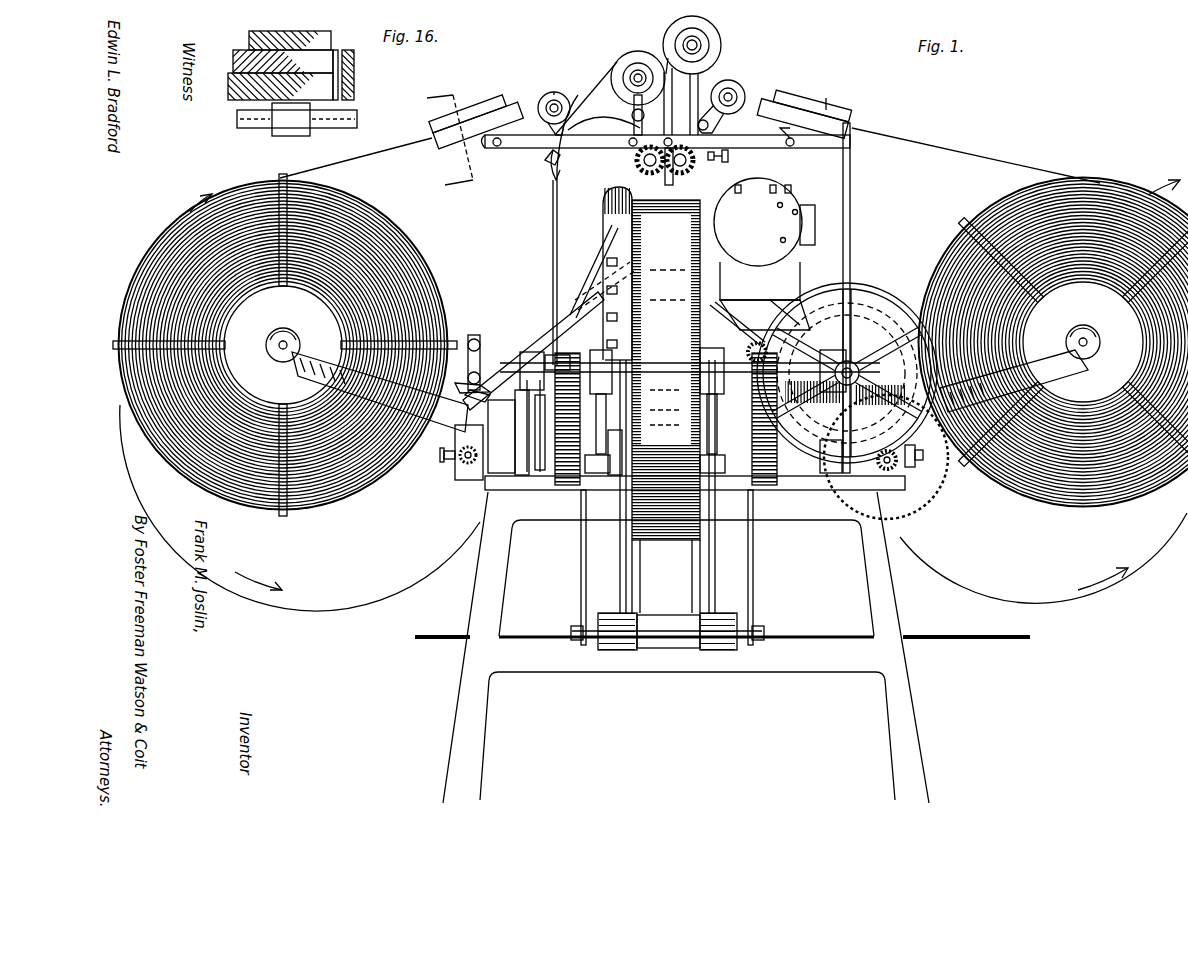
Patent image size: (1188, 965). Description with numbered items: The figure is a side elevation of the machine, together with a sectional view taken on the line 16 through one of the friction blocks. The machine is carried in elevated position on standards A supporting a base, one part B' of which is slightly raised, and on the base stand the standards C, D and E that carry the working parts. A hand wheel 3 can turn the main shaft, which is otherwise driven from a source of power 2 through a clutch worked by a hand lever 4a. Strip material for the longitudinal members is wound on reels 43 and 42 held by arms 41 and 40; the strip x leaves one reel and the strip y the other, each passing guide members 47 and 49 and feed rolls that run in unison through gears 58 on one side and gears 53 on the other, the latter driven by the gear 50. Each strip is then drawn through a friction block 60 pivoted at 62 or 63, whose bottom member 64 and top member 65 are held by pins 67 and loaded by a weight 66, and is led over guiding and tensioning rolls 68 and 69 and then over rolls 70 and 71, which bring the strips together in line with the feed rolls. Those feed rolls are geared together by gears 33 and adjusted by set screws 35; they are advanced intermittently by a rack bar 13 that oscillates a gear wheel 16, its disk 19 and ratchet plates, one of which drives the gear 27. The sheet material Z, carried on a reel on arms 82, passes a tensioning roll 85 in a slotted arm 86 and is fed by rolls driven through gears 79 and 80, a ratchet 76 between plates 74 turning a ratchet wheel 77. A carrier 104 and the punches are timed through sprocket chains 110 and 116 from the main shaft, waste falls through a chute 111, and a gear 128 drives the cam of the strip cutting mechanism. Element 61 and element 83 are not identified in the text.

In FIG. 16, the weight 66 is at (249, 43).
In FIG. 16, the top member 65 is at (338, 52).
In FIG. 16, the pins 67 is at (348, 62).
In FIG. 16, the bottom member 64 is at (354, 95).
In FIG. 1, the reel 43 is at (285, 345).
In FIG. 1, the reel 42 is at (1014, 342).
In FIG. 1, the strip Y y is at (320, 175).
In FIG. 1, the strip X x is at (997, 165).
In FIG. 1, the arm 41 is at (380, 392).
In FIG. 1, the arm 40 is at (1014, 381).
In FIG. 1, the standards A is at (470, 596).
In FIG. 1, the base part B' is at (695, 496).
In FIG. 1, the gears 58 is at (470, 470).
In FIG. 1, the arms 82 is at (567, 487).
In FIG. 1, the ratchet wheel 77 is at (532, 492).
In FIG. 1, the sheet material Z is at (667, 406).
In FIG. 1, the belt drum 83 is at (626, 394).
In FIG. 1, the gear 27 is at (615, 192).
In FIG. 1, the standard C is at (554, 225).
In FIG. 1, the pivot 63 is at (497, 148).
In FIG. 1, the rack bar 13 is at (548, 170).
In FIG. 1, the disk 19 is at (604, 115).
In FIG. 1, the guiding and tensioning roll 69 is at (554, 92).
In FIG. 1, the guiding and tensioning roll 71 is at (628, 60).
In FIG. 1, the guiding and tensioning roll 70 is at (720, 50).
In FIG. 1, the guiding and tensioning roll 68 is at (746, 94).
In FIG. 1, the gears 33 is at (718, 178).
In FIG. 1, the set screws 35 is at (730, 158).
In FIG. 1, the guide block 61 is at (436, 125).
In FIG. 1, the gear wheel 16 is at (454, 135).
In FIG. 1, the friction block 60 is at (855, 130).
In FIG. 1, the pivot 62 is at (800, 145).
In FIG. 1, the hand lever 4a is at (851, 246).
In FIG. 1, the standard D is at (758, 239).
In FIG. 1, the carrier 104 is at (820, 225).
In FIG. 1, the sprocket chain 110 is at (783, 292).
In FIG. 1, the sprocket chain 116 is at (740, 305).
In FIG. 1, the standard E is at (600, 263).
In FIG. 1, the chute 111 is at (535, 322).
In FIG. 1, the guide member 47 is at (478, 338).
In FIG. 1, the guide member 49 is at (468, 381).
In FIG. 1, the ratchet 76 is at (534, 383).
In FIG. 1, the plates 74 is at (525, 395).
In FIG. 1, the gear 80 is at (690, 410).
In FIG. 1, the gear 79 is at (607, 442).
In FIG. 1, the gear 128 is at (748, 345).
In FIG. 1, the hand wheel 3 is at (880, 300).
In FIG. 1, the source of power 2 is at (868, 332).
In FIG. 1, the gear 50 is at (932, 500).
In FIG. 1, the gears 53 is at (890, 470).
In FIG. 1, the slotted arm 86 is at (582, 572).
In FIG. 1, the tensioning roll 85 is at (718, 643).